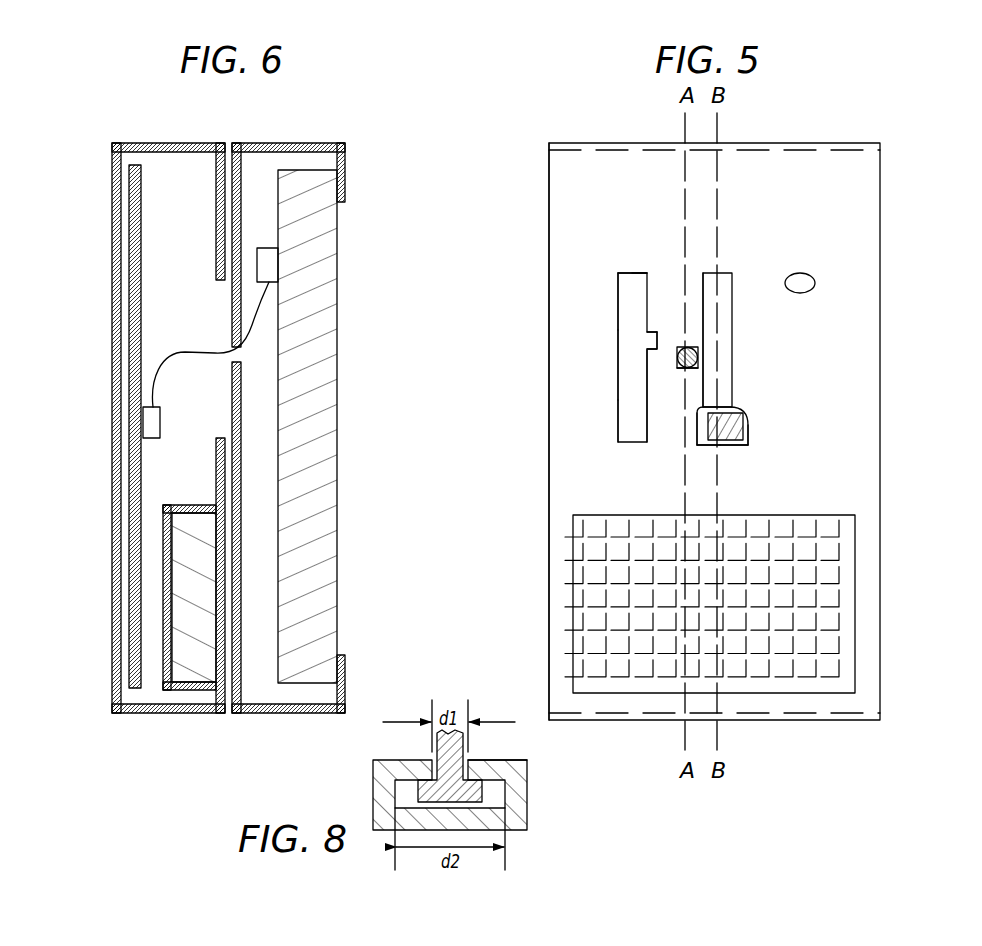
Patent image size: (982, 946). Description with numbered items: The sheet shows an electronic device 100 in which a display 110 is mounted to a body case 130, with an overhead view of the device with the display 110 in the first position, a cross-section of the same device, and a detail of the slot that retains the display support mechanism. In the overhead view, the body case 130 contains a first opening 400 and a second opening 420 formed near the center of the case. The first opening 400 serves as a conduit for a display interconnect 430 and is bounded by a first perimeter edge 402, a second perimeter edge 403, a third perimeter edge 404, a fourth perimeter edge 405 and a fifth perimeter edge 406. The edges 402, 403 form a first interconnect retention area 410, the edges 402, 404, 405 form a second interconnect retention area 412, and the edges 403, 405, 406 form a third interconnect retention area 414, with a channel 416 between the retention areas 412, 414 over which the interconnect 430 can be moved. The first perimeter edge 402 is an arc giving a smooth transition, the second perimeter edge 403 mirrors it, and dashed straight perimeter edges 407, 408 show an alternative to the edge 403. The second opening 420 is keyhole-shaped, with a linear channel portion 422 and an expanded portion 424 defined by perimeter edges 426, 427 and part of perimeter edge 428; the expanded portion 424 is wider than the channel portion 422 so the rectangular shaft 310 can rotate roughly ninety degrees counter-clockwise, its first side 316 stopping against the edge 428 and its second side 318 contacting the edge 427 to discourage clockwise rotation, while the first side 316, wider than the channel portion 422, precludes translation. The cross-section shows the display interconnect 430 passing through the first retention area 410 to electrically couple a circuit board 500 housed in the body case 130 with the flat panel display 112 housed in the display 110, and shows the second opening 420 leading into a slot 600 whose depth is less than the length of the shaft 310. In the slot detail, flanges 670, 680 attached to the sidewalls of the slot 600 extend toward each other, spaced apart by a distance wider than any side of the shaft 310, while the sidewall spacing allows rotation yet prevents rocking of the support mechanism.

In FIG. 6, the electronic device 100 is at (307, 722).
In FIG. 5, the electronic device 100 is at (856, 121).
In FIG. 6, the display 110 is at (312, 143).
In FIG. 5, the display 110 is at (570, 148).
In FIG. 6, the flat panel display 112 is at (327, 310).
In FIG. 6, the body case 130 is at (153, 143).
In FIG. 5, the body case 130 is at (548, 277).
In FIG. 5, the shaft 310 is at (730, 443).
In FIG. 5, the first side 316 is at (708, 413).
In FIG. 5, the second side 318 is at (725, 443).
In FIG. 6, the first opening 400 is at (211, 415).
In FIG. 5, the first opening 400 is at (681, 346).
In FIG. 5, the first perimeter edge 402 is at (647, 423).
In FIG. 5, the second perimeter edge 403 is at (681, 346).
In FIG. 5, the third perimeter edge 404 is at (630, 443).
In FIG. 5, the fourth perimeter edge 405 is at (618, 357).
In FIG. 5, the fifth perimeter edge 406 is at (636, 282).
In FIG. 5, the straight perimeter edge 407 is at (647, 331).
In FIG. 5, the straight perimeter edge 408 is at (657, 349).
In FIG. 6, the first interconnect retention area 410 is at (221, 344).
In FIG. 5, the first interconnect retention area 410 is at (676, 332).
In FIG. 5, the second interconnect retention area 412 is at (638, 421).
In FIG. 5, the third interconnect retention area 414 is at (636, 271).
In FIG. 5, the channel 416 is at (632, 297).
In FIG. 5, the second opening 420 is at (757, 297).
In FIG. 5, the channel portion 422 is at (724, 355).
In FIG. 5, the expanded portion 424 is at (731, 404).
In FIG. 5, the perimeter edge 426 is at (750, 423).
In FIG. 5, the perimeter edge 427 is at (735, 443).
In FIG. 5, the perimeter edge 428 is at (700, 290).
In FIG. 6, the display interconnect 430 is at (207, 353).
In FIG. 5, the display interconnect 430 is at (682, 366).
In FIG. 6, the circuit board 500 is at (130, 598).
In FIG. 8, the slot 600 is at (572, 804).
In FIG. 8, the flange 670 is at (415, 760).
In FIG. 8, the flange 680 is at (496, 760).